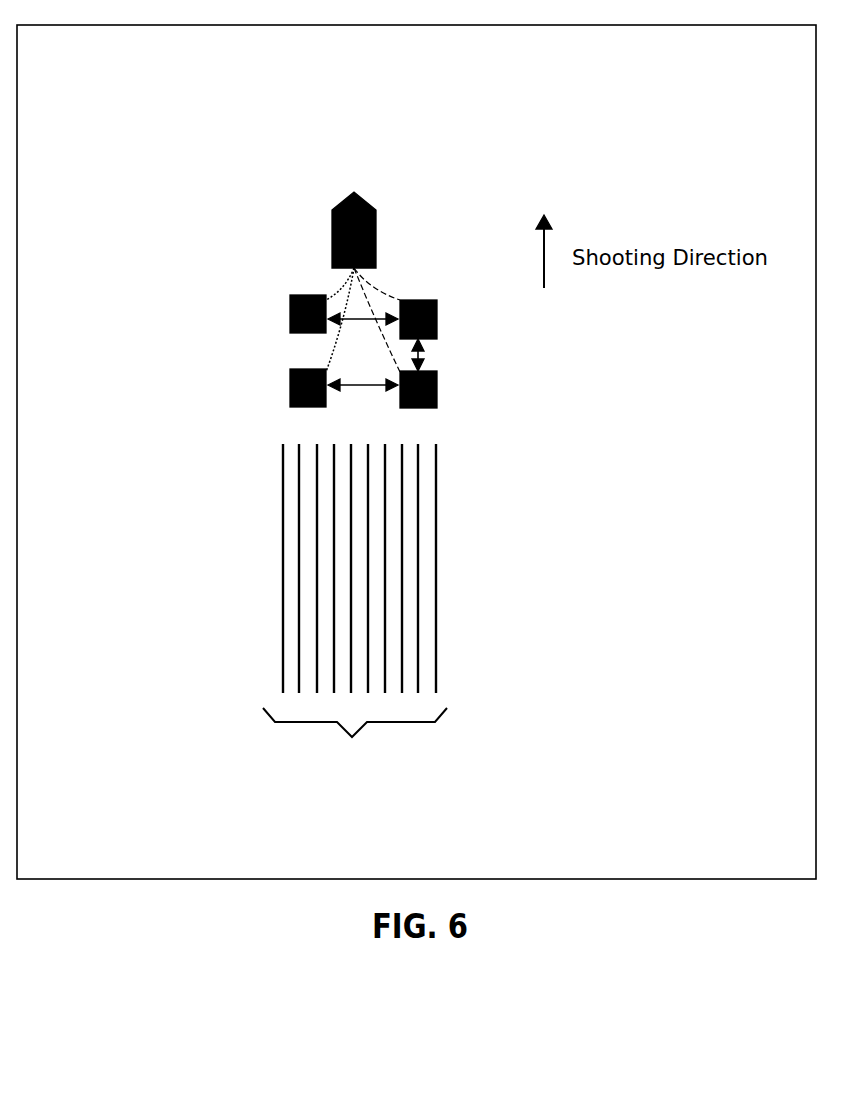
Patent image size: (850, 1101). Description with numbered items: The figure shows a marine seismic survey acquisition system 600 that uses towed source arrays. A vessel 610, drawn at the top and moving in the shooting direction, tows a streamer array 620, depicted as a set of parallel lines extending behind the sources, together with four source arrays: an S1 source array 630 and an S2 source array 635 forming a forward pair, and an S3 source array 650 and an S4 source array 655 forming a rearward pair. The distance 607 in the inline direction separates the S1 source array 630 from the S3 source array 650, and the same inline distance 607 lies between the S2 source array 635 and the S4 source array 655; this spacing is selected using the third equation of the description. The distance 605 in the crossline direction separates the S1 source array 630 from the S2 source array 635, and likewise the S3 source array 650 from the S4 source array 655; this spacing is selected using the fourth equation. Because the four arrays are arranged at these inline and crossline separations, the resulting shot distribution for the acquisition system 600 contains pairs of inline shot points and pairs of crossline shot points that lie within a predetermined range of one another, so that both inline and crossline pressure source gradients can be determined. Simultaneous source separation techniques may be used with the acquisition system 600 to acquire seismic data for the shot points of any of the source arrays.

The marine seismic survey acquisition system 600 is at (140, 173).
The vessel 610 is at (343, 203).
The S1 source array 630 is at (292, 297).
The S2 source array 635 is at (405, 302).
The S3 source array 650 is at (290, 393).
The S4 source array 655 is at (437, 393).
The distance in the crossline direction 605 is at (350, 322).
The distance in the inline direction 607 is at (423, 355).
The streamer array 620 is at (355, 608).